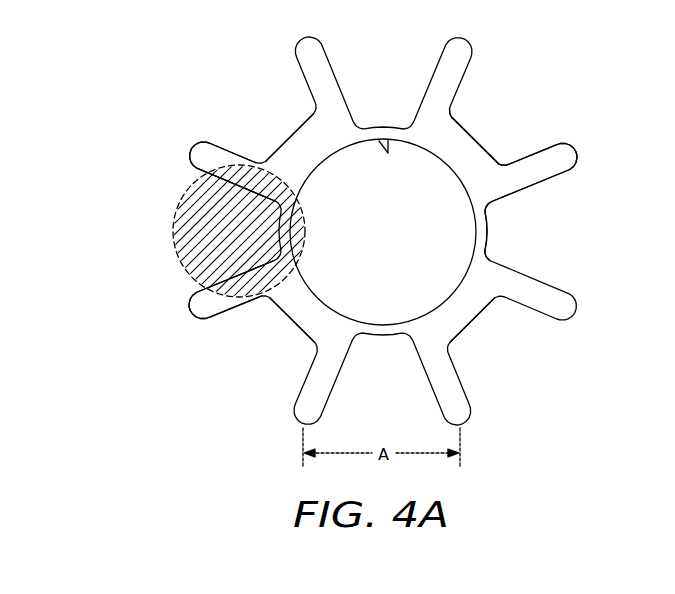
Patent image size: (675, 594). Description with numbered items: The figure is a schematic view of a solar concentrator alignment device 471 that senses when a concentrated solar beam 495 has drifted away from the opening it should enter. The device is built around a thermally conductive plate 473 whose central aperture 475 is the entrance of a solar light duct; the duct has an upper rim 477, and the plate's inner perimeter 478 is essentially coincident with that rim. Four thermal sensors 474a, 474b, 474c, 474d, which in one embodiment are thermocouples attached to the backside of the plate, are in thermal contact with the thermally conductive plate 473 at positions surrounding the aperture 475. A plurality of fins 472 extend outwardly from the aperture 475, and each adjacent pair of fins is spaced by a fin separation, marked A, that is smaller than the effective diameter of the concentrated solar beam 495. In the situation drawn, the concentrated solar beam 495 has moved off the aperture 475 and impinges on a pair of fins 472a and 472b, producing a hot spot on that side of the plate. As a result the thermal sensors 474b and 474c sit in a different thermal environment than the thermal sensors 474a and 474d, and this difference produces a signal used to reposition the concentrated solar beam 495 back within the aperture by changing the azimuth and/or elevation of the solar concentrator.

The solar concentrator alignment device 471 is at (130, 59).
The fins 472 is at (563, 160).
The fin 472a is at (200, 310).
The fin 472b is at (203, 150).
The thermally conductive plate 473 is at (482, 242).
The thermal sensor 474a is at (463, 312).
The thermal sensor 474b is at (303, 307).
The thermal sensor 474c is at (302, 153).
The thermal sensor 474d is at (473, 157).
The aperture 475 is at (401, 244).
The upper rim 477 is at (440, 153).
The inner perimeter 478 is at (388, 139).
The concentrated solar beam 495 is at (200, 245).